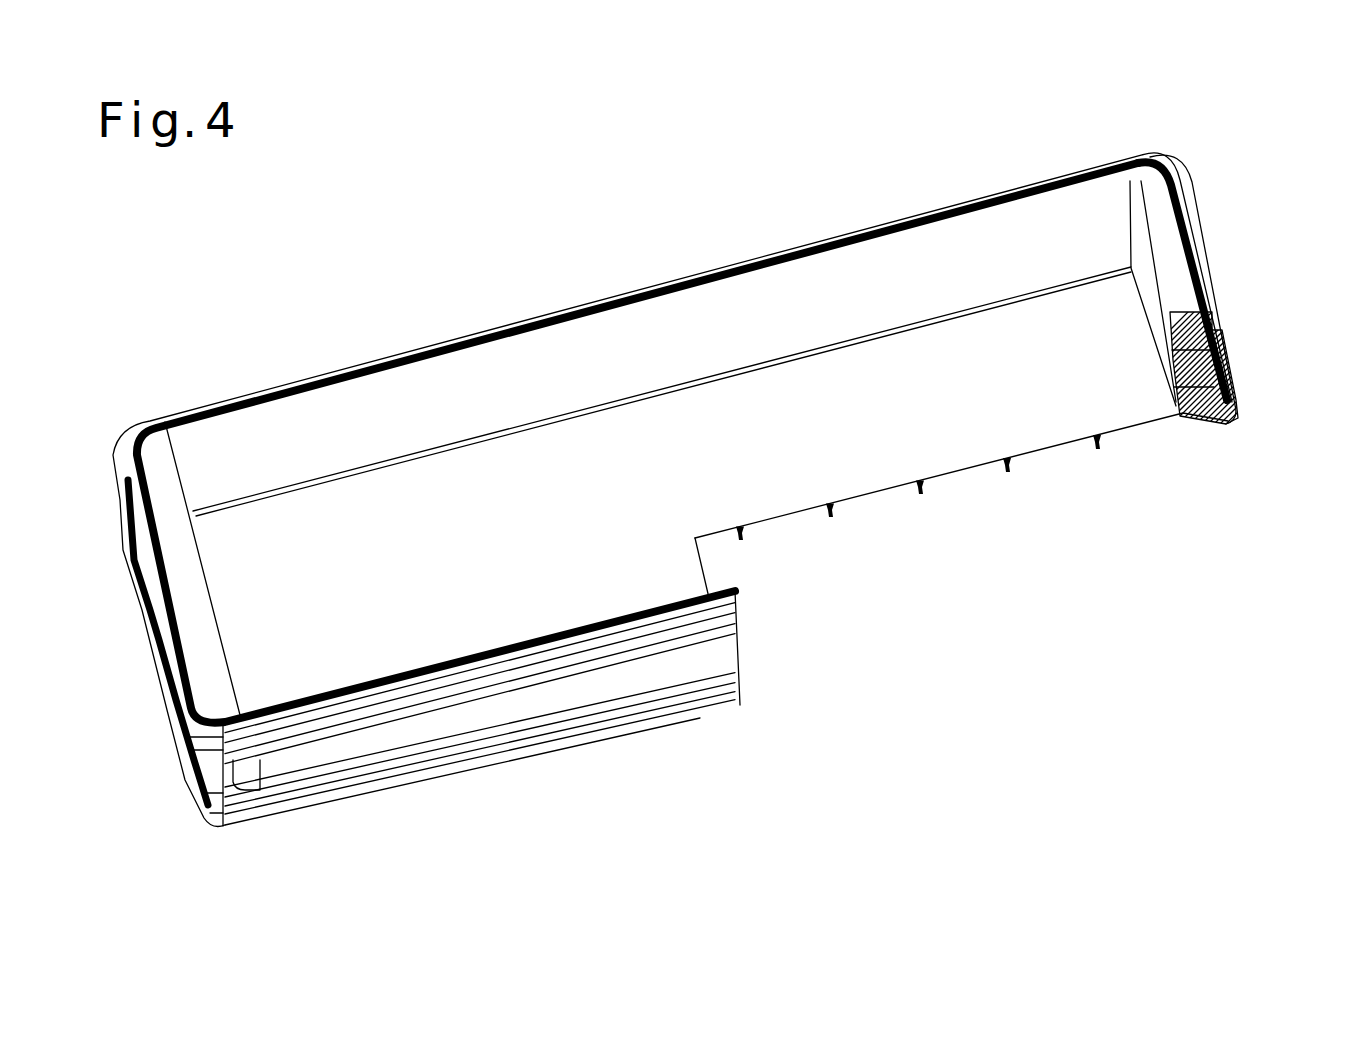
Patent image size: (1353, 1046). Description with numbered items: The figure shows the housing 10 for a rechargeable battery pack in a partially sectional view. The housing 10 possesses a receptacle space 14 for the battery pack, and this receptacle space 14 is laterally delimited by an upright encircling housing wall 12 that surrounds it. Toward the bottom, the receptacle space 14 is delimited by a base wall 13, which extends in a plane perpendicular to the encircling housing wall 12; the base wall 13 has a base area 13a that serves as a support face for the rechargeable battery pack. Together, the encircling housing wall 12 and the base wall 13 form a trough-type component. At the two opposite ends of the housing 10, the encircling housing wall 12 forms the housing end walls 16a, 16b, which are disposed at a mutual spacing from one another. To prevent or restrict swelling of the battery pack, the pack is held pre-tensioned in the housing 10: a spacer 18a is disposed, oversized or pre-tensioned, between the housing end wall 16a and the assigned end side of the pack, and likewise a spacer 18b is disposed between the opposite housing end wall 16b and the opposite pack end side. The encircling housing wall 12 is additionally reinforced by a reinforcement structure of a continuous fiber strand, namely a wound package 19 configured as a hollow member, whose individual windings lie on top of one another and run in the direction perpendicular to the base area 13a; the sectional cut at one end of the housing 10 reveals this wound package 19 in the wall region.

The housing 10 is at (620, 271).
The encircling housing wall 12 is at (513, 710).
The base wall 13 is at (604, 744).
The base area 13a is at (613, 494).
The receptacle space 14 is at (831, 390).
The housing end wall 16a is at (153, 656).
The housing end wall 16b is at (1213, 262).
The spacer 18a is at (192, 588).
The spacer 18b is at (1153, 292).
The wound package 19 is at (1157, 165).